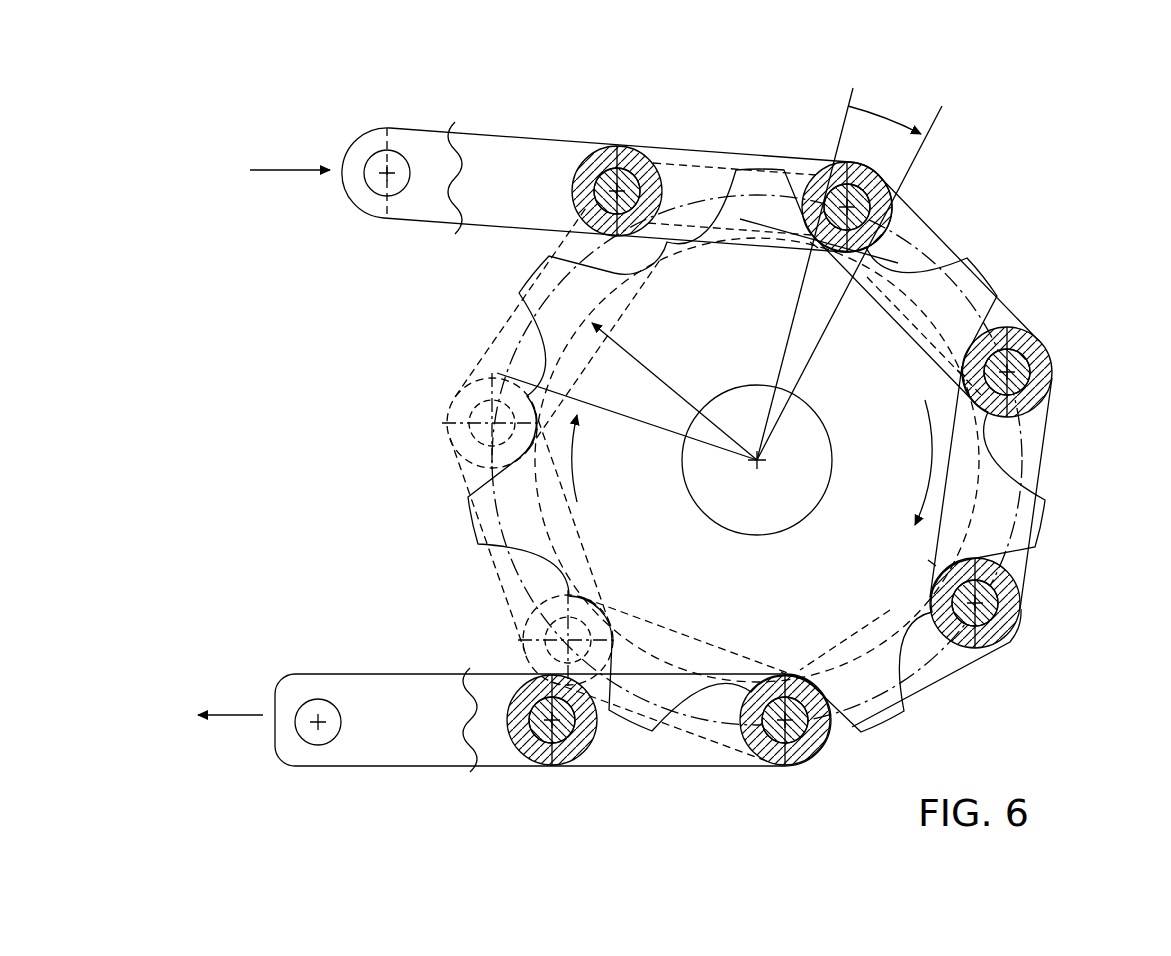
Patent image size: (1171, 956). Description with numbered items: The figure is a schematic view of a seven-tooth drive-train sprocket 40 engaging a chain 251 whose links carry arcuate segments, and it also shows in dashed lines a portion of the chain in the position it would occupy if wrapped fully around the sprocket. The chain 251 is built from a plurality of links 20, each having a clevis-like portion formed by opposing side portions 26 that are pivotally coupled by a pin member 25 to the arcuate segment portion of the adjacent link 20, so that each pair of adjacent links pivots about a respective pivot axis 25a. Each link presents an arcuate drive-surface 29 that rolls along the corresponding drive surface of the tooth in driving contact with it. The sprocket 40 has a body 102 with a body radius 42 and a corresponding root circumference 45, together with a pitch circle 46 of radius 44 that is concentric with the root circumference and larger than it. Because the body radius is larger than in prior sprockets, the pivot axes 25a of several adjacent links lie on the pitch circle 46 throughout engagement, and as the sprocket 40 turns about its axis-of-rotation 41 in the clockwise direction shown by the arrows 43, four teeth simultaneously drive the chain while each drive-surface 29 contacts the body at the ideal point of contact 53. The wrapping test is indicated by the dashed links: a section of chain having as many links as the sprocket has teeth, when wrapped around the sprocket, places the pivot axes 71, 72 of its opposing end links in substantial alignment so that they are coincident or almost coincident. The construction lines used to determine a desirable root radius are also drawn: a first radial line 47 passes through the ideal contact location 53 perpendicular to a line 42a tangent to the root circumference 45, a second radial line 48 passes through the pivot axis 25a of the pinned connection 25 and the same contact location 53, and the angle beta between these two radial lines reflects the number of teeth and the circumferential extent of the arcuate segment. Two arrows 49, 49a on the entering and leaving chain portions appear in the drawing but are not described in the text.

The link 20 is at (517, 110).
The pin member 25 is at (402, 200).
The pivot axis 25a is at (848, 212).
The side portion 26 is at (482, 135).
The drive-surface 29 is at (343, 186).
The sprocket 40 is at (453, 530).
The axis-of-rotation 41 is at (766, 452).
The body radius 42 is at (527, 300).
The tangent line 42a is at (748, 248).
The arrows 43 is at (579, 465).
The pitch circle radius 44 is at (500, 378).
The root circumference 45 is at (620, 292).
The pitch circle 46 is at (503, 357).
The first radial line 47 is at (843, 110).
The second radial line 48 is at (925, 128).
The chain travel direction 49 is at (292, 168).
The chain exit direction 49a is at (230, 722).
The ideal point of contact 53 is at (814, 246).
The pivot axis of first end link 71 is at (384, 172).
The pivot axis of second end link 72 is at (316, 720).
The body 102 is at (712, 584).
The chain 251 is at (583, 118).